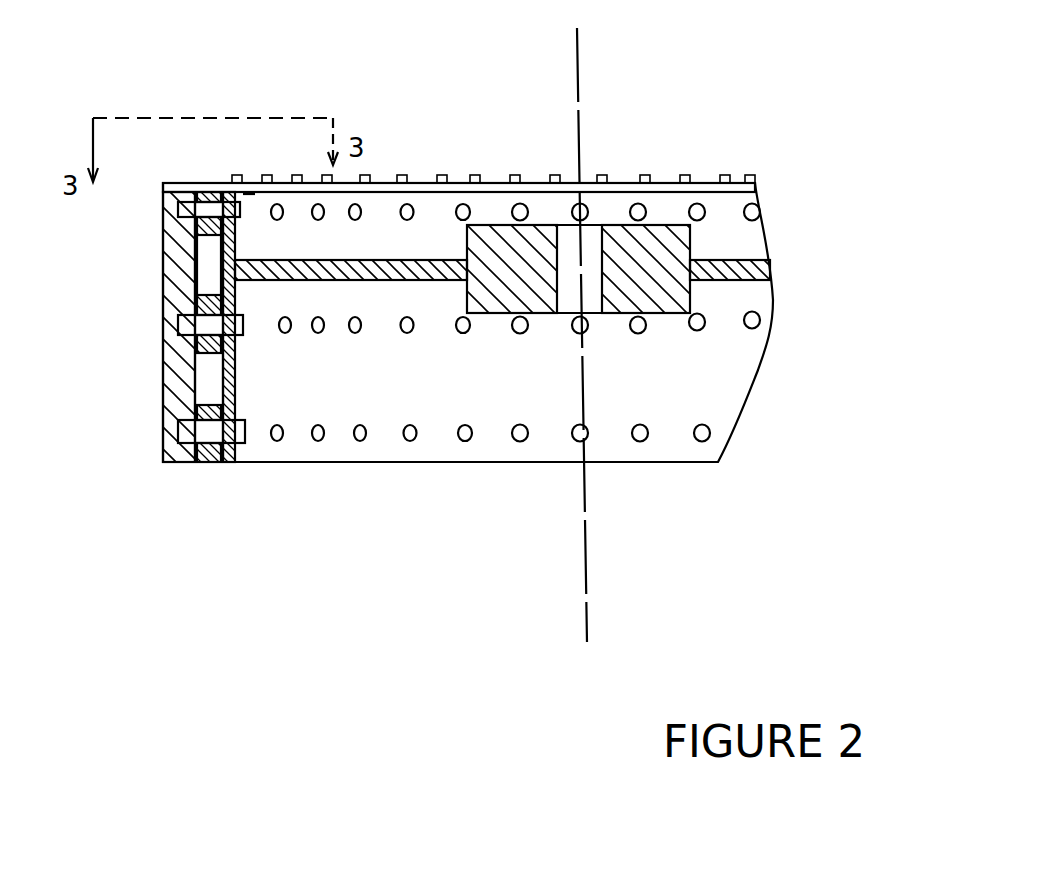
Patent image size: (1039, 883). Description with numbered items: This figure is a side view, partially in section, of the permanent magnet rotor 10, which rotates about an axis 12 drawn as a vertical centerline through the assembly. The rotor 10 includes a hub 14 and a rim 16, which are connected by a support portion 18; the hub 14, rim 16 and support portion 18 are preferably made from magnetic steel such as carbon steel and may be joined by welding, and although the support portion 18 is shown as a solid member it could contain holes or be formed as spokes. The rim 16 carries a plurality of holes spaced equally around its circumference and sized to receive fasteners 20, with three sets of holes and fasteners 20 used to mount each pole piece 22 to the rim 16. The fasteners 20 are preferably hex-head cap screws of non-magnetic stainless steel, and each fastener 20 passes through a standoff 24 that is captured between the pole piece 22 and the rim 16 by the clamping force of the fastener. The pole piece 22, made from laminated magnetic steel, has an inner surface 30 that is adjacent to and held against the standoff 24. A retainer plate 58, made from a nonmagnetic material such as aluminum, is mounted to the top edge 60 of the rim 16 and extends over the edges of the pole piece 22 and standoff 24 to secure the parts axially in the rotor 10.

The rotor 10 is at (827, 63).
The axis 12 is at (590, 620).
The hub 14 is at (690, 240).
The rim 16 is at (237, 387).
The support portion 18 is at (745, 282).
The fasteners 20 is at (257, 442).
The pole pieces 22 is at (160, 450).
The standoff 24 is at (200, 250).
The inner surface 30 is at (195, 268).
The retainer plate 58 is at (198, 182).
The top edge 60 is at (243, 194).